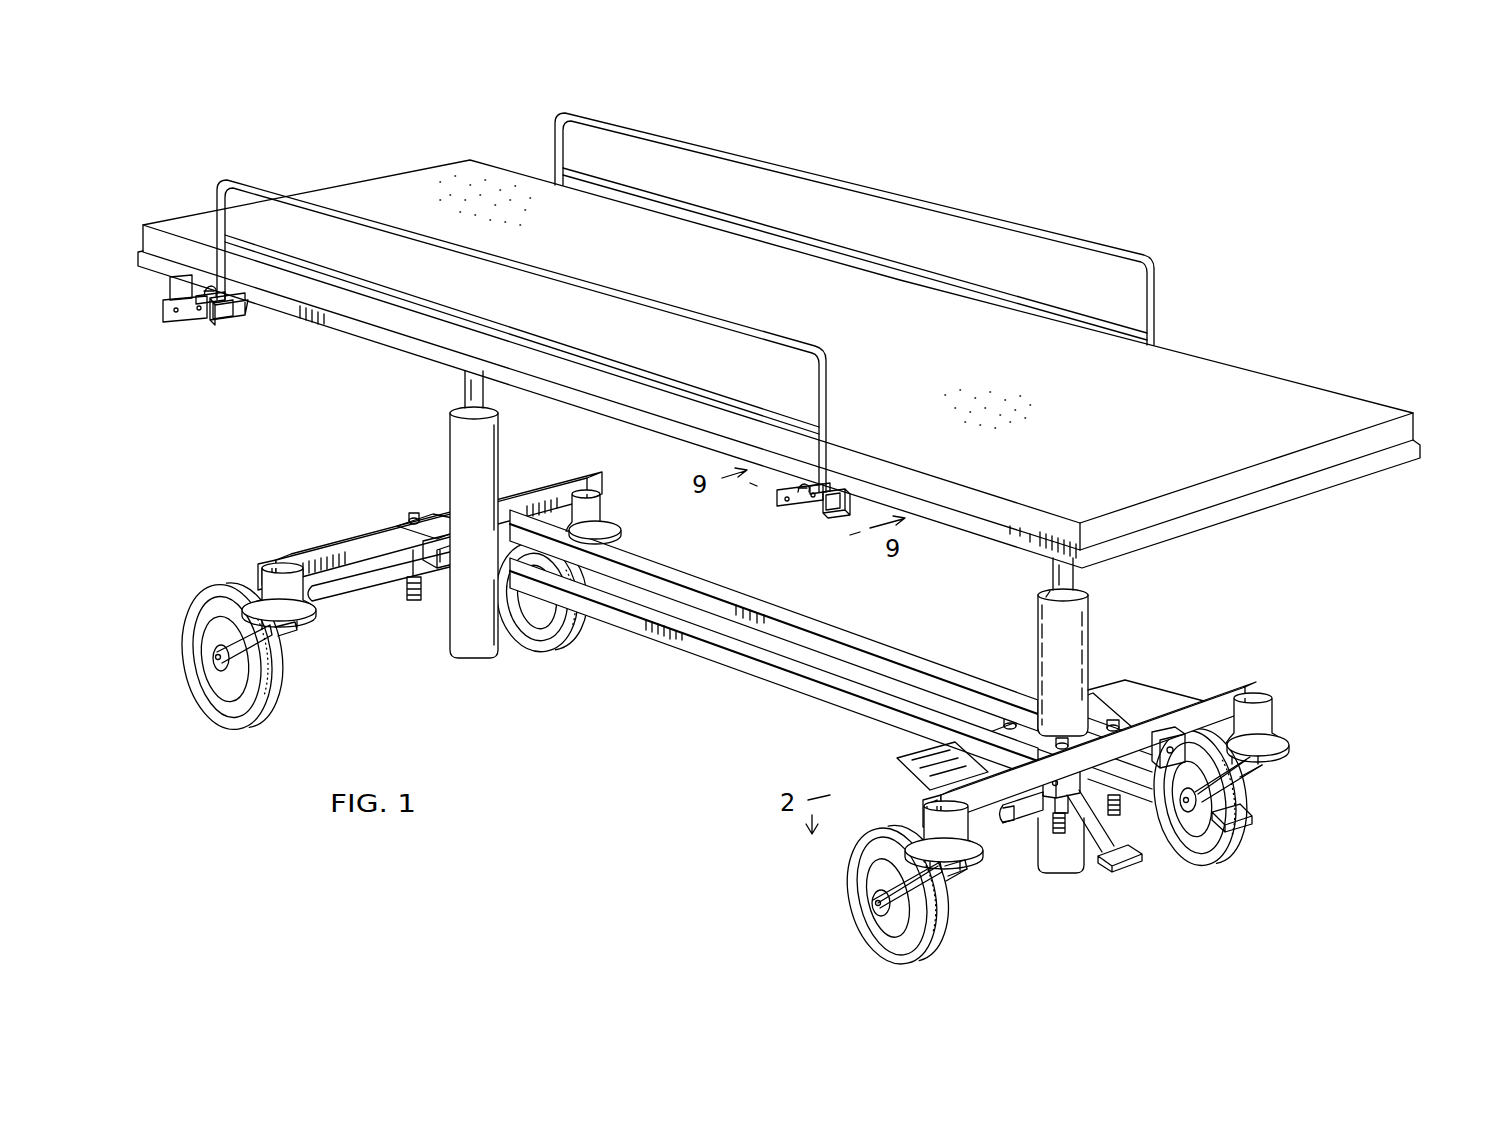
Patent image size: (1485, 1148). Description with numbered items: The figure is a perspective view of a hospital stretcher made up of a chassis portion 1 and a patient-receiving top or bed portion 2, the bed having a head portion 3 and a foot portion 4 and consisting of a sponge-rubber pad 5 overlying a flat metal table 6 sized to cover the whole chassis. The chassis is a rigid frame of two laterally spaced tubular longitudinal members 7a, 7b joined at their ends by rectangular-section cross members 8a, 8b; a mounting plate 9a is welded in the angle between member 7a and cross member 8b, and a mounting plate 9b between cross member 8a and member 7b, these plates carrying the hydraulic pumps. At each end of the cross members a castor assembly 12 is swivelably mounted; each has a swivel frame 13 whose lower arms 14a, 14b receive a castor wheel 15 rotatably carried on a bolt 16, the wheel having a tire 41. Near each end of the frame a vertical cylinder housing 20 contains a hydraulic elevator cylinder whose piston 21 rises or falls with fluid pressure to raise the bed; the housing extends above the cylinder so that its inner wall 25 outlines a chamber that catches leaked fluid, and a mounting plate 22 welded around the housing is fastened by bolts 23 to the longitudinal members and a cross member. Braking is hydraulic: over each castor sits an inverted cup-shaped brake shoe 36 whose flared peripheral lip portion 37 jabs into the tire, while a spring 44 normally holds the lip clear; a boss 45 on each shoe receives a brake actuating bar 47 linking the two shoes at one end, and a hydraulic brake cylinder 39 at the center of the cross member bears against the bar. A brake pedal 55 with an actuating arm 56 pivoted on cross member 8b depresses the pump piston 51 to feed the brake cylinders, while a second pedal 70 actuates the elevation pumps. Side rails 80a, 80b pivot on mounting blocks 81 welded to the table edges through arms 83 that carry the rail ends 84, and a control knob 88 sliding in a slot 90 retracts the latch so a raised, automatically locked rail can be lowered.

The chassis portion 1 is at (1358, 802).
The patient-receiving top or bed portion 2 is at (1196, 376).
The head portion 3 is at (362, 198).
The foot portion 4 is at (1240, 470).
The pad 5 is at (1412, 428).
The flat table 6 is at (1300, 480).
The longitudinally extending member 7a is at (720, 648).
The longitudinally extending member 7b is at (710, 592).
The cross member 8a is at (340, 538).
The cross member 8b is at (1265, 690).
The mounting plate 9a is at (908, 756).
The mounting plate 9b is at (1118, 694).
The castor assembly 12 is at (254, 578).
The swivel frame 13 is at (290, 648).
The arm 14a is at (892, 893).
The arm 14b is at (950, 862).
The castor wheel 15 is at (225, 690).
The bolt 16 is at (878, 905).
The hydraulic cylinder housing 20 is at (452, 432).
The piston 21 is at (468, 384).
The mounting plate 22 is at (436, 524).
The bolt 23 is at (416, 516).
The inner wall 25 is at (1046, 596).
The brake shoe 36 is at (303, 620).
The flared peripheral lip portion 37 is at (305, 632).
The hydraulic brake cylinder 39 is at (452, 565).
The tire 41 is at (242, 724).
The spring 44 is at (413, 595).
The boss 45 is at (1236, 716).
The brake actuating bar 47 is at (365, 578).
The piston 51 is at (1018, 824).
The brake pedal 55 is at (1126, 866).
The actuating arm 56 is at (1090, 860).
The pedal 70 is at (1246, 822).
The side rail 80a is at (828, 378).
The side rail 80b is at (1155, 292).
The mounting block 81 is at (232, 320).
The arm 83 is at (218, 322).
The end of side rail 84 is at (222, 300).
The control knob 88 is at (192, 312).
The slot 90 is at (208, 290).